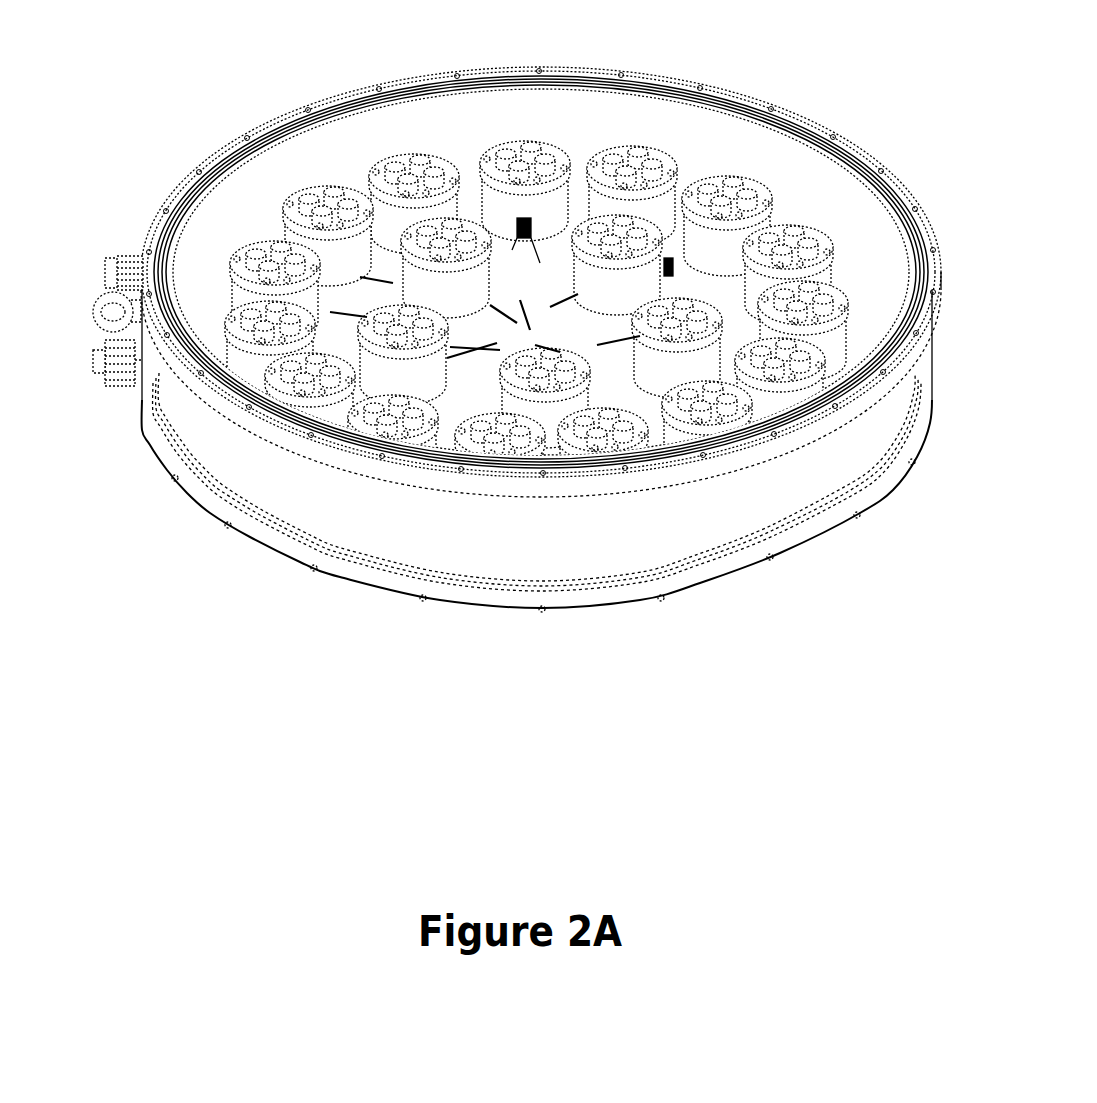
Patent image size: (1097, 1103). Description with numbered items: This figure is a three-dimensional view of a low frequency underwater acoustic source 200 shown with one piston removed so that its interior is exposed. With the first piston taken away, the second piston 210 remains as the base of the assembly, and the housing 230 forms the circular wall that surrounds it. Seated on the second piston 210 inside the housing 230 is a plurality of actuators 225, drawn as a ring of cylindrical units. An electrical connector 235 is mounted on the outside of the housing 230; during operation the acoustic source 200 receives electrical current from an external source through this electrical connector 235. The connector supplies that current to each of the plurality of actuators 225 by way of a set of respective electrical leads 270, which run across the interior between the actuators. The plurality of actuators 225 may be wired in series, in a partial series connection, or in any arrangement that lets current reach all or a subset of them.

The low frequency underwater acoustic source 200 is at (892, 110).
The second piston 210 is at (549, 612).
The plurality of actuators 225 is at (637, 150).
The housing 230 is at (713, 523).
The electrical connector 235 is at (108, 390).
The electrical leads 270 is at (517, 330).